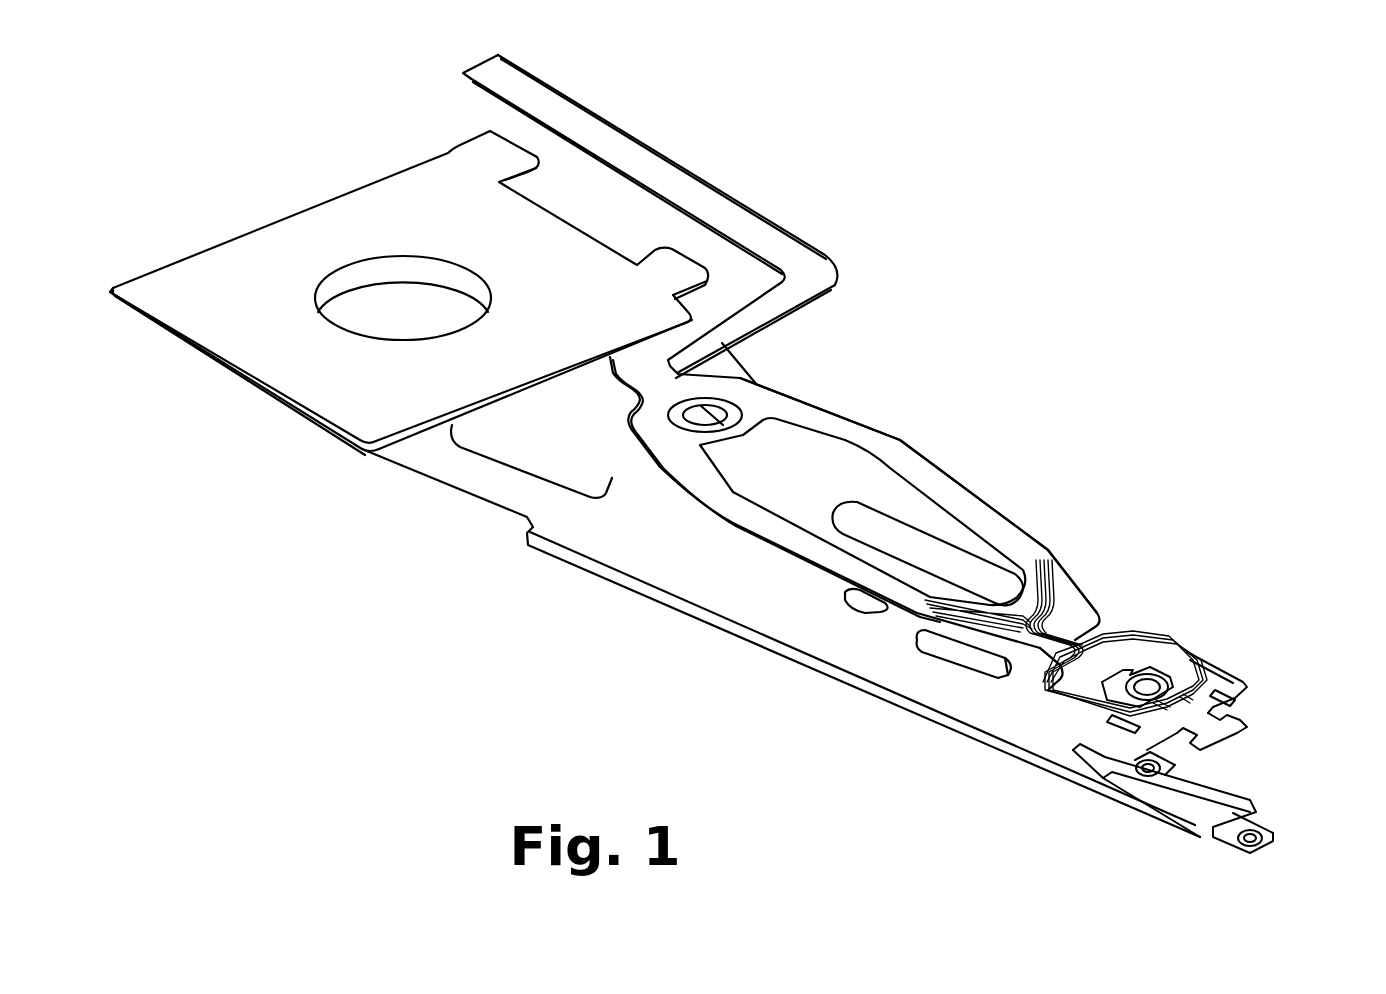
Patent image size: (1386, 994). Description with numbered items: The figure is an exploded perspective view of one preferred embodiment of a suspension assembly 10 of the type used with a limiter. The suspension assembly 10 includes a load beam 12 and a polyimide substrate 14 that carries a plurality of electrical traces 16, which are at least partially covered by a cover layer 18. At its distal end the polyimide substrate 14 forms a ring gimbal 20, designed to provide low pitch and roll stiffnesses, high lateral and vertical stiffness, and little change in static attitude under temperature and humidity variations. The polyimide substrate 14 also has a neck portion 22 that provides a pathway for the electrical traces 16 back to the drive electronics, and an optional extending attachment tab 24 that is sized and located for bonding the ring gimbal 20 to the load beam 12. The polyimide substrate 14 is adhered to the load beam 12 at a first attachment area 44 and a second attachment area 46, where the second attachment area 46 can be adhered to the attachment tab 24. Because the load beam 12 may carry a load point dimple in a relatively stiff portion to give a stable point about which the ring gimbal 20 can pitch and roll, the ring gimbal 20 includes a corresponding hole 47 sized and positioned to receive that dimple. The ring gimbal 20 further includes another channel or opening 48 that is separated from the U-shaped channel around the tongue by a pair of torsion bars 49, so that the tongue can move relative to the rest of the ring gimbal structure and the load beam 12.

The suspension assembly 10 is at (908, 435).
The load beam 12 is at (320, 442).
The polyimide substrate 14 is at (790, 498).
The electrical traces 16 is at (1097, 637).
The cover layer 18 is at (797, 407).
The ring gimbal 20 is at (1230, 672).
The neck portion 22 is at (1043, 650).
The attachment tab 24 is at (1238, 723).
The first attachment area 44 is at (1013, 685).
The second attachment area 46 is at (1230, 806).
The hole 47 is at (1148, 686).
The channel or opening 48 is at (1172, 658).
The torsion bars 49 is at (1236, 688).